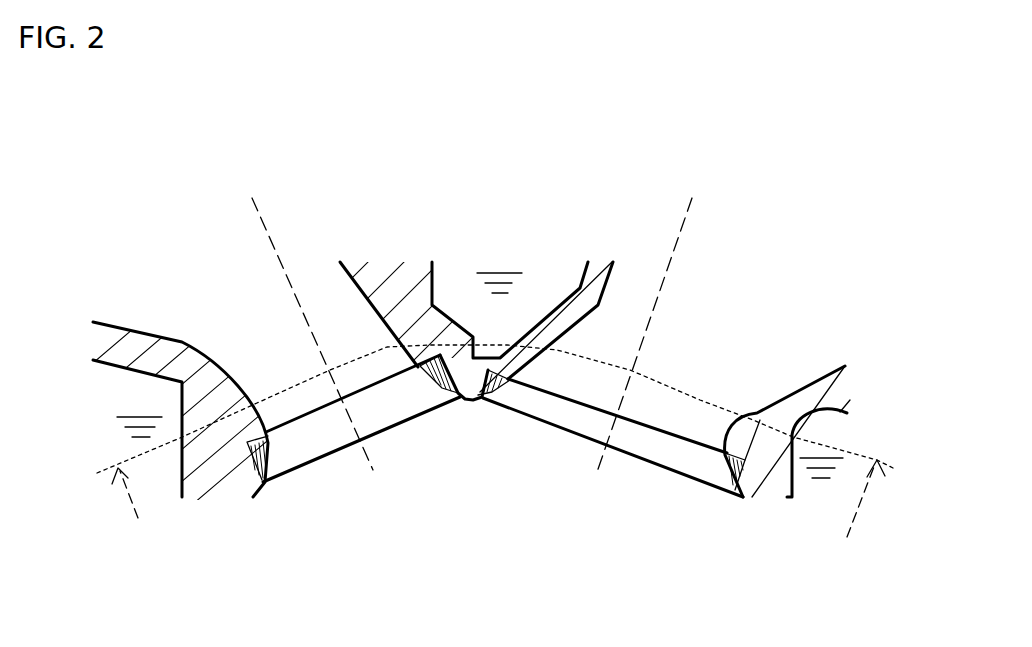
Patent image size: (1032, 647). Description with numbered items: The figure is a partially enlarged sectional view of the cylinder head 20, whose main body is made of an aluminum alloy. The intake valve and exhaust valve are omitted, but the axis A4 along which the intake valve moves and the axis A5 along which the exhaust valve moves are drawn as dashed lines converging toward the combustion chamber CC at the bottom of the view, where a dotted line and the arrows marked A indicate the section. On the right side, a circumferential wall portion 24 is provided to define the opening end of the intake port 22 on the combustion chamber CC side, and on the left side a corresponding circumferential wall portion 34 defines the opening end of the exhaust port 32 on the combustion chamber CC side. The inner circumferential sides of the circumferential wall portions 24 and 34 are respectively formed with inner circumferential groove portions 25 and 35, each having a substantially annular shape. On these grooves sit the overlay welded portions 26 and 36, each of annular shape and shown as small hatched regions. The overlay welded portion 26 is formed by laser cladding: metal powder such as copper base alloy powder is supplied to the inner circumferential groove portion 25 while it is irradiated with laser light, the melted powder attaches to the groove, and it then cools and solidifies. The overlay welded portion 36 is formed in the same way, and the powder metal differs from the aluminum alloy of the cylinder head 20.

The cylinder head 20 is at (832, 256).
The intake port 22 is at (830, 370).
The circumferential wall portion 24 is at (752, 470).
The inner circumferential groove portion 25 is at (490, 398).
The overlay welded portion 26 is at (723, 500).
The exhaust port 32 is at (102, 322).
The circumferential wall portion 34 is at (238, 466).
The inner circumferential groove portion 35 is at (435, 383).
The overlay welded portion 36 is at (267, 460).
The section line A is at (498, 517).
The axis A4 is at (656, 321).
The axis A5 is at (301, 319).
The combustion chamber CC is at (591, 547).